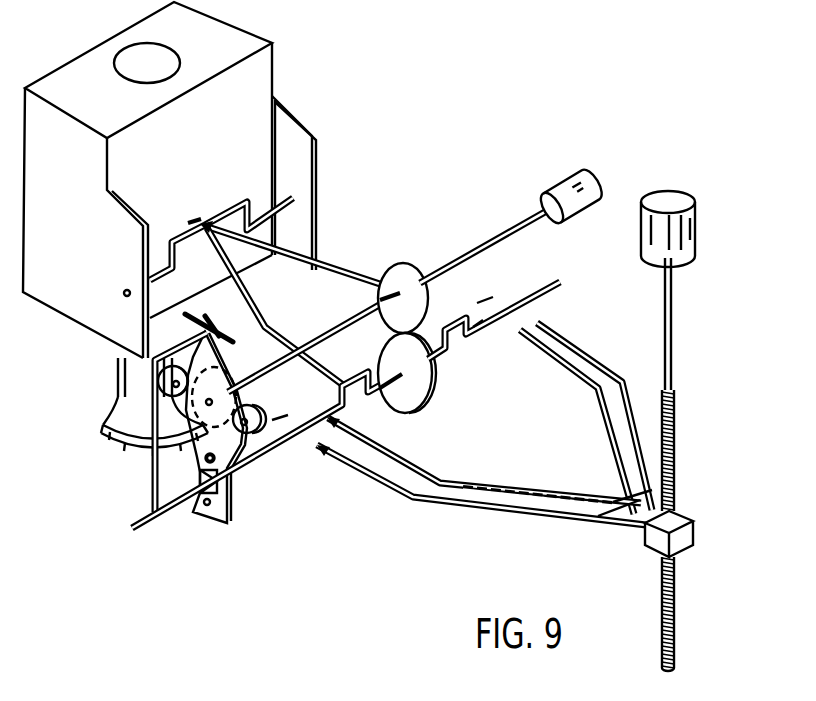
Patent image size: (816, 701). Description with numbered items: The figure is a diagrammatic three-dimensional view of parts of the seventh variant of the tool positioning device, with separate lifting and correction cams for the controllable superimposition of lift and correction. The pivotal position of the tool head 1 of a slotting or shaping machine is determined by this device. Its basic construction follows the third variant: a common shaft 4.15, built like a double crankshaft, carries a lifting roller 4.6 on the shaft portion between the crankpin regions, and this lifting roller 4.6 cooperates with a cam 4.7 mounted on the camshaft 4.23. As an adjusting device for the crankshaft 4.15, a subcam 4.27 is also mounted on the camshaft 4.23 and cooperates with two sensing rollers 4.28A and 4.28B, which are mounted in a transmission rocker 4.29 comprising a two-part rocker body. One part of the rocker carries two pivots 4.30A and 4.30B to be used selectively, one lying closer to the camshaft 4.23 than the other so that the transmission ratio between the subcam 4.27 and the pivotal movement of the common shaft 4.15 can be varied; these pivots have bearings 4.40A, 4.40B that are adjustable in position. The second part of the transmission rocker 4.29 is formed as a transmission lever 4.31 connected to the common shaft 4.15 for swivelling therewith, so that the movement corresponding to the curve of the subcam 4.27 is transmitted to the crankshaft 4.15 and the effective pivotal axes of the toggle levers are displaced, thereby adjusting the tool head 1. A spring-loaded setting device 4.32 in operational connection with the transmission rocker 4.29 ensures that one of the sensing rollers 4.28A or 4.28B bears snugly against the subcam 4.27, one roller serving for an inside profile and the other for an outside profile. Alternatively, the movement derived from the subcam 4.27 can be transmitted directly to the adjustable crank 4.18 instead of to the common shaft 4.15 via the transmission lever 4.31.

The tool head 1 is at (47, 87).
The adjustable crank 4.18 is at (228, 214).
The spring-loaded setting device 4.32 is at (216, 326).
The subcam 4.27 is at (234, 366).
The cam 4.7 is at (401, 277).
The camshaft 4.23 is at (512, 228).
The common shaft 4.15 is at (541, 292).
The lifting roller 4.6 is at (417, 405).
The sensing roller 4.28A is at (167, 379).
The bearing 4.40A is at (203, 454).
The pivot 4.30A is at (205, 460).
The transmission lever 4.31 is at (152, 496).
The sensing roller 4.28B is at (257, 435).
The transmission rocker 4.29 is at (232, 511).
The bearing 4.40B is at (202, 508).
The pivot 4.30B is at (206, 512).